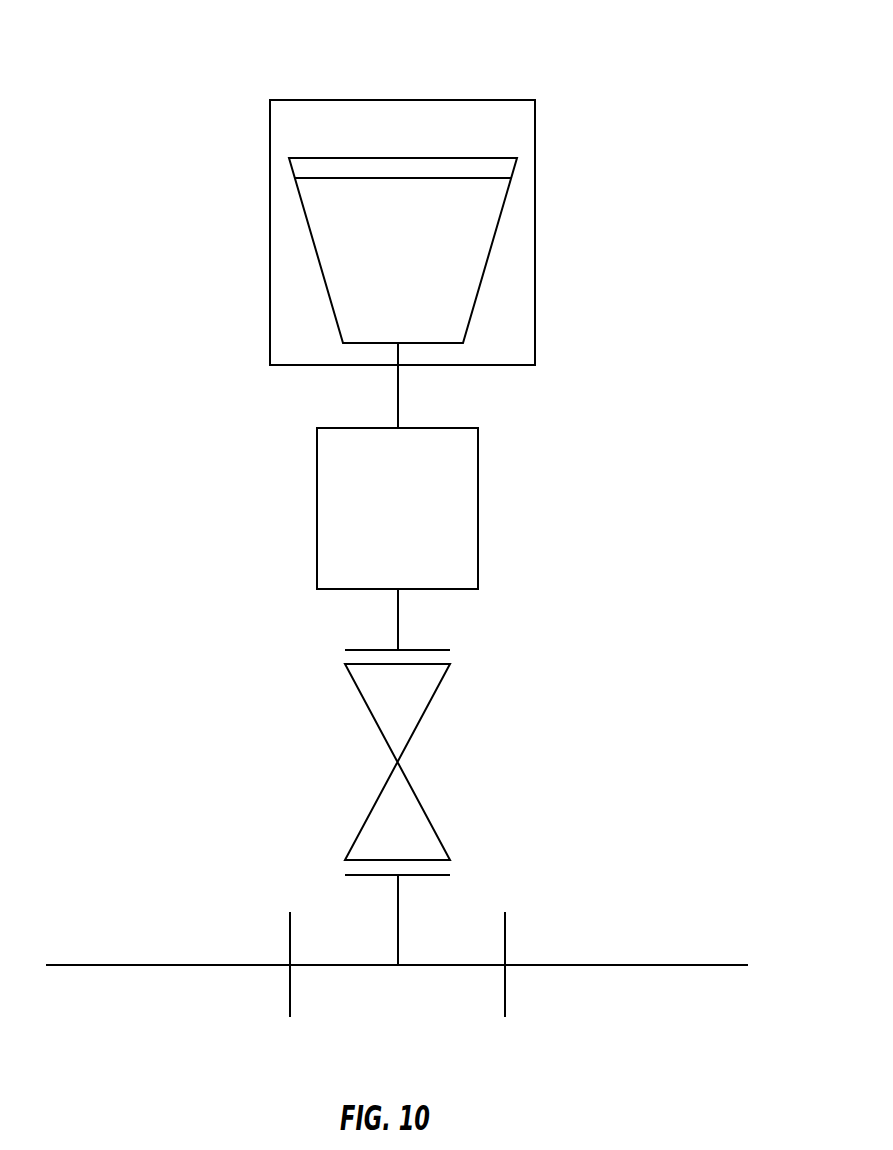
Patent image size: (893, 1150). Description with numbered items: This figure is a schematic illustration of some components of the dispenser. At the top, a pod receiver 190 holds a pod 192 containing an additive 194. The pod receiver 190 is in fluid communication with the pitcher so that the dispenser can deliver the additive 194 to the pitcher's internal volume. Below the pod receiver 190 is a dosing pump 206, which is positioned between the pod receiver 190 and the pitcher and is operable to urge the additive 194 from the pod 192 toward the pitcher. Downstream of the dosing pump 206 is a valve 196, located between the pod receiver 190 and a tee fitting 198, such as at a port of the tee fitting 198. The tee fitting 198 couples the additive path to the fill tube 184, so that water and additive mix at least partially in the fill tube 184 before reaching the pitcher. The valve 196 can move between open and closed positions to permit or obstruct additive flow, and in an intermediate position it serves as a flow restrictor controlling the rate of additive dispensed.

The fill tube 184 is at (137, 964).
The pod receiver 190 is at (483, 128).
The pod 192 is at (339, 157).
The additive 194 is at (478, 229).
The valve 196 is at (487, 767).
The tee fitting 198 is at (313, 902).
The dosing pump 206 is at (468, 494).